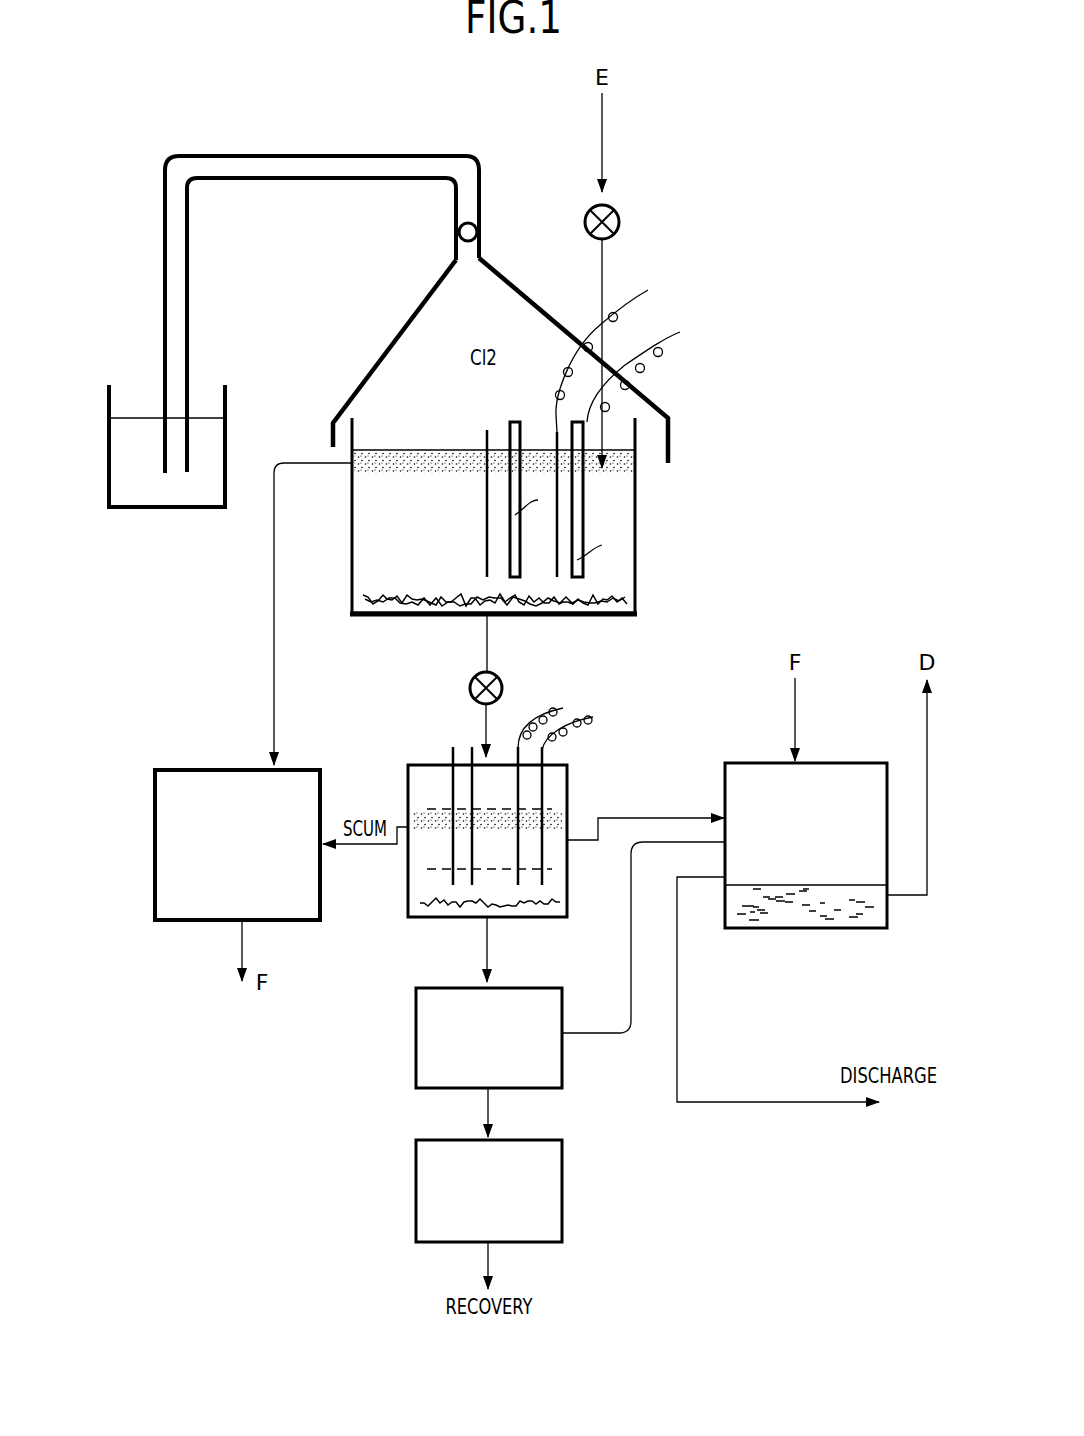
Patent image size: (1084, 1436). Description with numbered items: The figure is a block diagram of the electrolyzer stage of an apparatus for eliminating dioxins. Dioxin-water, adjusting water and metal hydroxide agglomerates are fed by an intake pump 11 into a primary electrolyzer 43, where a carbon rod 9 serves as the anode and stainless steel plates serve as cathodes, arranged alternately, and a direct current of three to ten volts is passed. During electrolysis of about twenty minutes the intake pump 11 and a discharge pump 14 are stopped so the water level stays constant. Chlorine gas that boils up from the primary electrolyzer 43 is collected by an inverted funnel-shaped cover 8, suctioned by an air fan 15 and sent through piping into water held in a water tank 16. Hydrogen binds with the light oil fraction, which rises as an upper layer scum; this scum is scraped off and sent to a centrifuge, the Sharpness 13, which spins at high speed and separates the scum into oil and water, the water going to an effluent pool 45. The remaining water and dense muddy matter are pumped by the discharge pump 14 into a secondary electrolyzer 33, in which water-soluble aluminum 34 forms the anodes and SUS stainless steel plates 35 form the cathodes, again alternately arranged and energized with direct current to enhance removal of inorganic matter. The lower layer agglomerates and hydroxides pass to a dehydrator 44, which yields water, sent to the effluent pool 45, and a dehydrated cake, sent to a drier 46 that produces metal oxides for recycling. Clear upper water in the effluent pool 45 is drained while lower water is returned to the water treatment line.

The inverted funnel-shaped cover 8 is at (517, 287).
The carbon rod 9 is at (577, 508).
The intake pump 11 is at (620, 217).
The centrifuge (Sharpness) 13 is at (222, 768).
The discharge pump 14 is at (502, 682).
The air fan 15 is at (459, 231).
The water tank 16 is at (227, 438).
The secondary electrolyzer 33 is at (550, 818).
The aluminum anode 34 is at (542, 873).
The SUS stainless steel plate 35 is at (517, 788).
The primary electrolyzer 43 is at (702, 393).
The dehydrator 44 is at (523, 987).
The effluent pool 45 is at (823, 762).
The drier 46 is at (563, 1188).